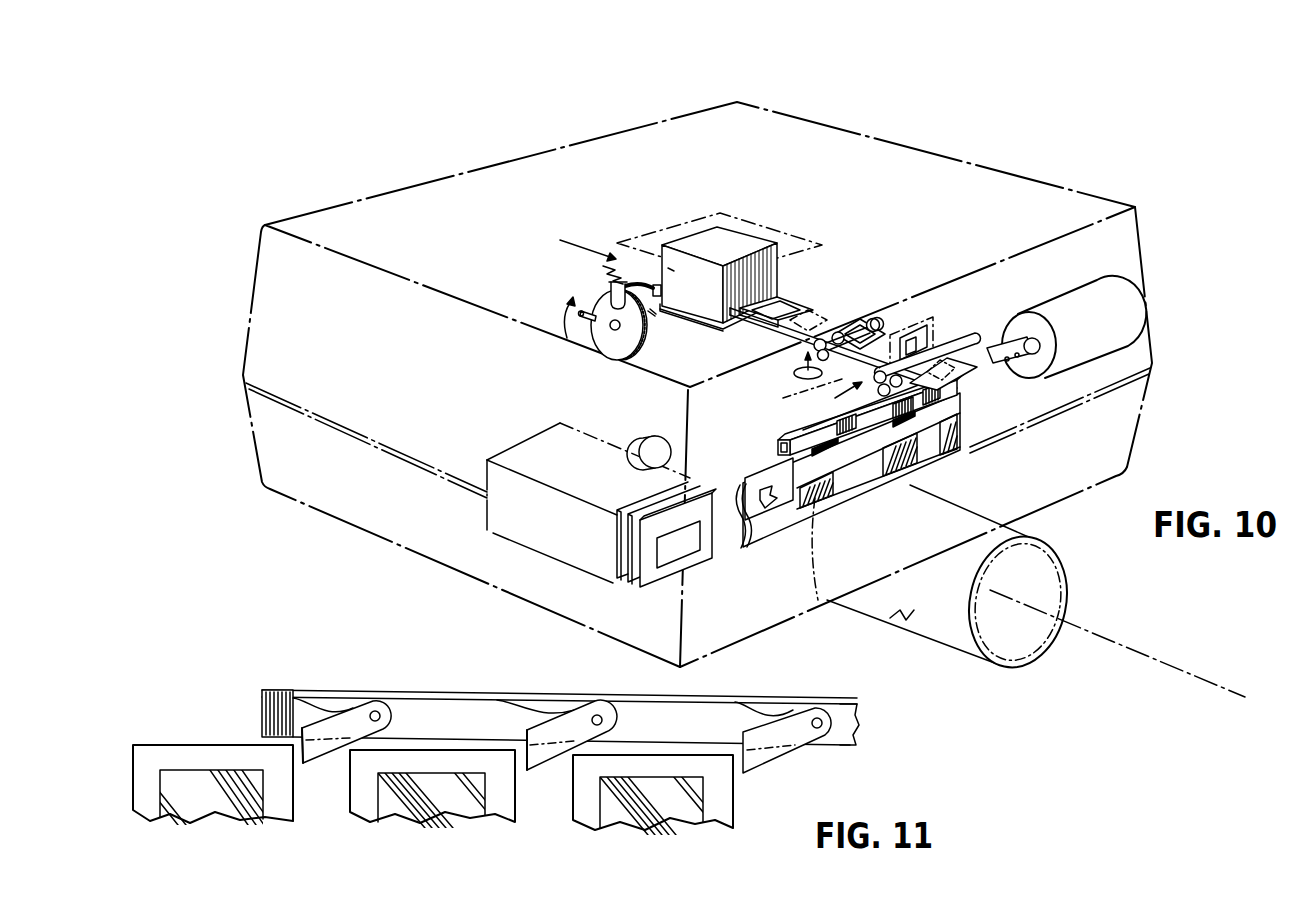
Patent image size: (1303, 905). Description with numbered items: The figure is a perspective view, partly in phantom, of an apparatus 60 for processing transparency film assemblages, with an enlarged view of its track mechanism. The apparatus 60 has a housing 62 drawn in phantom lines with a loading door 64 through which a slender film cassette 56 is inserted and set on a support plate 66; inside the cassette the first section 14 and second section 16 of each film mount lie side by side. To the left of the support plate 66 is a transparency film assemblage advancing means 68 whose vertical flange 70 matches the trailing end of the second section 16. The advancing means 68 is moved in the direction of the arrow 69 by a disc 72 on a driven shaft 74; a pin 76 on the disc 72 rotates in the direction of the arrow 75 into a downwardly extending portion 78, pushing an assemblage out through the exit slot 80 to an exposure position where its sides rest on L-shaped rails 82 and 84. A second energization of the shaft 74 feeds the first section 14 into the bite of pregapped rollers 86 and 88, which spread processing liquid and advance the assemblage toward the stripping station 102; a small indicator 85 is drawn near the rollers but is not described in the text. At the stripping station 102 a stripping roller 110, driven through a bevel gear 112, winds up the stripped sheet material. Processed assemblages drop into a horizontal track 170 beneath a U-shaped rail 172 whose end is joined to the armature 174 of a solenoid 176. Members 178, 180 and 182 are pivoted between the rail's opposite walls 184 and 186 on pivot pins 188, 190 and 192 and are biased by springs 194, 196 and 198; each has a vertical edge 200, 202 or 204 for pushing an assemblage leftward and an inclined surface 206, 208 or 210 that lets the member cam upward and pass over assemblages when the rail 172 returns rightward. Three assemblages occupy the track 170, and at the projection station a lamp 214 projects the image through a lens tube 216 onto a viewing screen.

In FIG. 10, the first section 14 is at (826, 316).
In FIG. 10, the second section 16 is at (790, 310).
In FIG. 10, the film cassette 56 is at (760, 245).
In FIG. 10, the apparatus 60 is at (987, 154).
In FIG. 10, the housing 62 is at (507, 163).
In FIG. 10, the loading door 64 is at (750, 225).
In FIG. 10, the support plate 66 is at (718, 325).
In FIG. 10, the transparency film assemblage advancing means 68 is at (603, 268).
In FIG. 10, the arrow 69 is at (605, 243).
In FIG. 10, the vertical flange 70 is at (662, 290).
In FIG. 10, the disc 72 is at (612, 354).
In FIG. 10, the driven shaft 74 is at (648, 303).
In FIG. 10, the arrow 75 is at (565, 322).
In FIG. 10, the pin 76 is at (583, 318).
In FIG. 10, the downwardly extending portion 78 is at (611, 286).
In FIG. 10, the exit slot 80 is at (763, 298).
In FIG. 10, the L-shaped rail 82 is at (782, 333).
In FIG. 10, the L-shaped rail 84 is at (1005, 369).
In FIG. 10, the lift indicator 85 is at (794, 373).
In FIG. 10, the pregapped roller 86 is at (873, 319).
In FIG. 10, the pregapped roller 88 is at (824, 359).
In FIG. 10, the stripping station 102 is at (940, 336).
In FIG. 10, the stripping roller 110 is at (833, 399).
In FIG. 10, the bevel gear 112 is at (778, 396).
In FIG. 10, the track 170 is at (938, 462).
In FIG. 10, the U-shaped rail 172 is at (807, 423).
In FIG. 11, the U-shaped rail 172 is at (650, 694).
In FIG. 10, the armature 174 is at (1020, 328).
In FIG. 10, the solenoid 176 is at (1068, 310).
In FIG. 11, the member 178 is at (353, 708).
In FIG. 11, the member 180 is at (583, 704).
In FIG. 11, the member 182 is at (809, 710).
In FIG. 10, the wall 184 is at (778, 447).
In FIG. 11, the wall 184 is at (857, 730).
In FIG. 10, the wall 186 is at (834, 473).
In FIG. 11, the pivot pin 188 is at (385, 710).
In FIG. 11, the pivot pin 190 is at (593, 712).
In FIG. 11, the pivot pin 192 is at (830, 720).
In FIG. 11, the spring 194 is at (313, 700).
In FIG. 11, the spring 196 is at (523, 697).
In FIG. 11, the spring 198 is at (767, 712).
In FIG. 11, the vertical edge 200 is at (293, 751).
In FIG. 11, the vertical edge 202 is at (515, 756).
In FIG. 11, the vertical edge 204 is at (733, 760).
In FIG. 11, the inclined surface 206 is at (327, 764).
In FIG. 11, the inclined surface 208 is at (557, 758).
In FIG. 10, the inclined surface 210 is at (487, 530).
In FIG. 11, the inclined surface 210 is at (778, 768).
In FIG. 10, the lamp 214 is at (650, 432).
In FIG. 10, the lens tube 216 is at (890, 629).